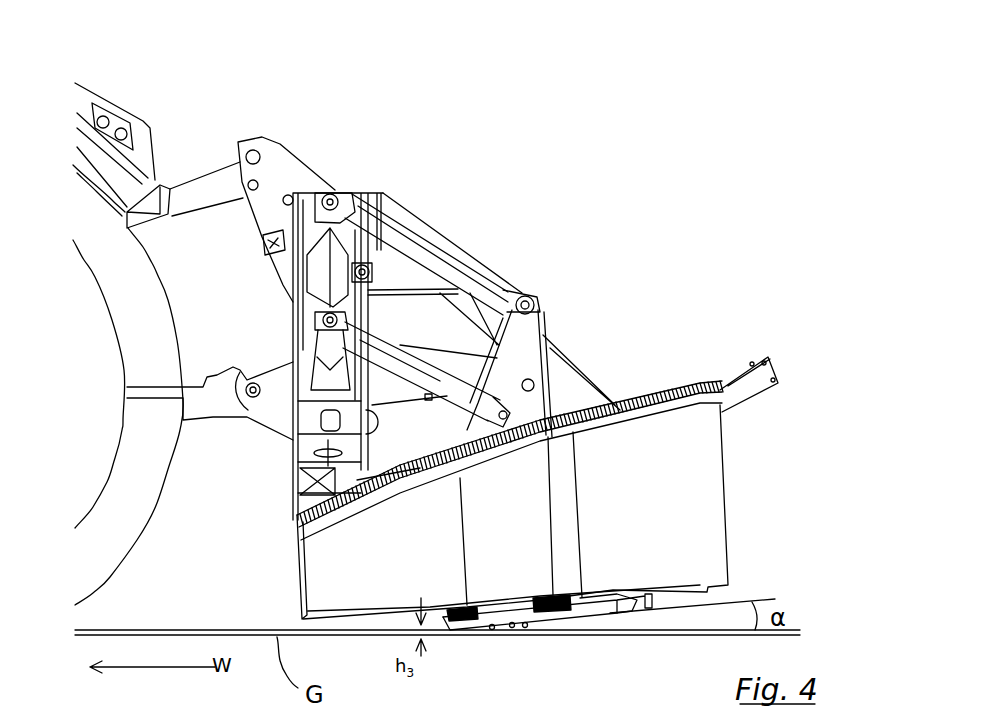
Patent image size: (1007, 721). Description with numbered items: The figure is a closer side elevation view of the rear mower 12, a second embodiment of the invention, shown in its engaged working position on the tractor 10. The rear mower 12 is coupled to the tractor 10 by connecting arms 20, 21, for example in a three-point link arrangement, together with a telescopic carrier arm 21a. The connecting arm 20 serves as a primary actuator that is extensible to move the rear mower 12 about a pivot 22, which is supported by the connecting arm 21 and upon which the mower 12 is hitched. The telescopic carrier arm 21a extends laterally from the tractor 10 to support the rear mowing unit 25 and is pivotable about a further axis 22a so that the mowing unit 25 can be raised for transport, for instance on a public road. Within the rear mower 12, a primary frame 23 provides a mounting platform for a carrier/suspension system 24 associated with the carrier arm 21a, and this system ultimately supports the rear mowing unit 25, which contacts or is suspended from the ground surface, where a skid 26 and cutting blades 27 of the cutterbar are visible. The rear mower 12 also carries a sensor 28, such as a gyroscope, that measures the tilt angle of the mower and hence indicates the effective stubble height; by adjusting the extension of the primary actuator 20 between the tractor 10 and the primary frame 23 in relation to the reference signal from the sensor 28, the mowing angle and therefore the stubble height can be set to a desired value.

The tractor 10 is at (95, 92).
The rear mower 12 is at (584, 120).
The connecting arm 20 is at (200, 183).
The connecting arm 21 is at (207, 378).
The telescopic carrier arm 21a is at (333, 253).
The pivot 22 is at (251, 400).
The further axis 22a is at (440, 293).
The primary frame 23 is at (320, 173).
The carrier/suspension system 24 is at (440, 267).
The rear mowing unit 25 is at (703, 488).
The skid 26 is at (512, 632).
The cutting blades 27 is at (453, 628).
The sensor 28 is at (267, 248).